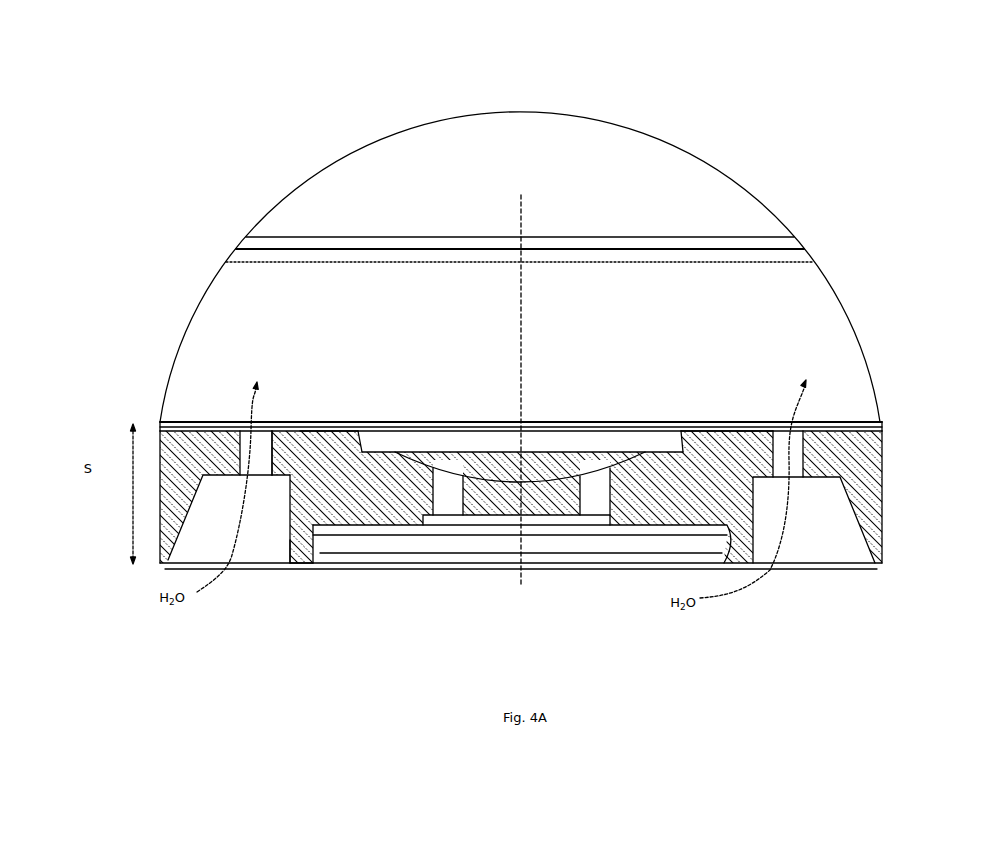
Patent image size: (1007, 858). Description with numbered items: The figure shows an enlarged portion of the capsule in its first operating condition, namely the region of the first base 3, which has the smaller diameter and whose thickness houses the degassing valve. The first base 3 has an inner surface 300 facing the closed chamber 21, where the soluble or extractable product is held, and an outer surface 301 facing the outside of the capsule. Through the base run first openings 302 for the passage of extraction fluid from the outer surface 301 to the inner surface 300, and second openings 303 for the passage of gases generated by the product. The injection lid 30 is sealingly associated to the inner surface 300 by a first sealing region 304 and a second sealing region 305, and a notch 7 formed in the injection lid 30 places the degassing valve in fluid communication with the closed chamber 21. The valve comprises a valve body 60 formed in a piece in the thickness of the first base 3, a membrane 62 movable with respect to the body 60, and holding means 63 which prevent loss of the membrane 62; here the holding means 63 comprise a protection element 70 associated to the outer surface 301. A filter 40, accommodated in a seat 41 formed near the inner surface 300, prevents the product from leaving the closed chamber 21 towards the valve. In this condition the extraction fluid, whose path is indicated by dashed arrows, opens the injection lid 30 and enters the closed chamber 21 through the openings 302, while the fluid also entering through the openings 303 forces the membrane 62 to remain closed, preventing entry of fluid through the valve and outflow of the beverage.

The first base 3 is at (878, 512).
The inner surface 300 is at (838, 434).
The outer surface 301 is at (306, 571).
The first openings 302 is at (264, 442).
The second openings 303 is at (601, 478).
The first sealing region 304 is at (165, 422).
The second sealing region 305 is at (323, 423).
The notch 7 is at (526, 416).
The closed chamber 21 is at (526, 191).
The injection lid 30 is at (410, 414).
The filter 40 is at (496, 438).
The seat 41 is at (683, 447).
The valve body 60 is at (337, 460).
The membrane 62 is at (587, 538).
The holding means 63 is at (445, 578).
The protection element 70 is at (388, 569).